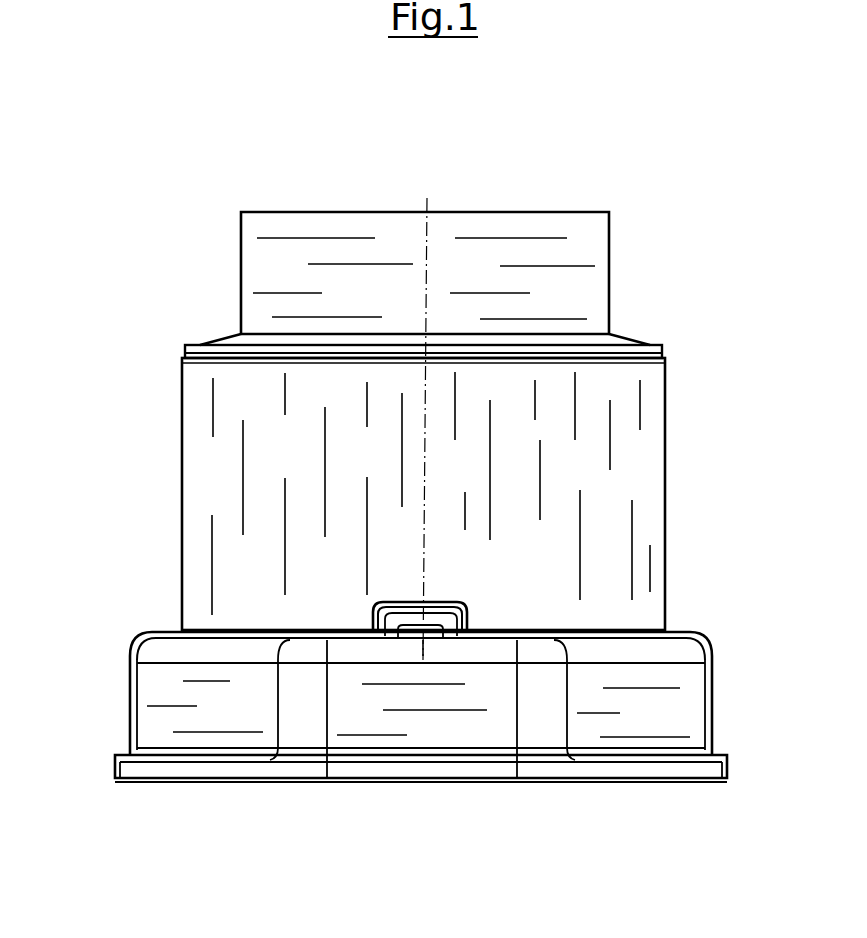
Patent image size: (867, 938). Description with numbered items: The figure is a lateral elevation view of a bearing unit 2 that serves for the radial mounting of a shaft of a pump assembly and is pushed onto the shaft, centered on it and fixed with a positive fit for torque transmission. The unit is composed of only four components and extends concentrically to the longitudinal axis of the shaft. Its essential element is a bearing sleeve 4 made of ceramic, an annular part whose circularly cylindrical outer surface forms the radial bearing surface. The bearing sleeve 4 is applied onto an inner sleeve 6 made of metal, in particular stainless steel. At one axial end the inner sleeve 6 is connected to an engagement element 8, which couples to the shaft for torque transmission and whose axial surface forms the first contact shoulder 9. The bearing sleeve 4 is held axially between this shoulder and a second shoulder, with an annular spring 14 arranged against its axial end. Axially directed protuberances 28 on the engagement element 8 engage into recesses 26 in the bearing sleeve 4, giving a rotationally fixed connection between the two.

The bearing unit 2 is at (563, 185).
The inner sleeve 6 is at (598, 289).
The annular spring 14 is at (623, 338).
The bearing sleeve 4 is at (637, 440).
The recesses 26 is at (448, 603).
The protuberances 28 is at (463, 608).
The first contact shoulder 9 is at (667, 637).
The engagement element 8 is at (148, 684).